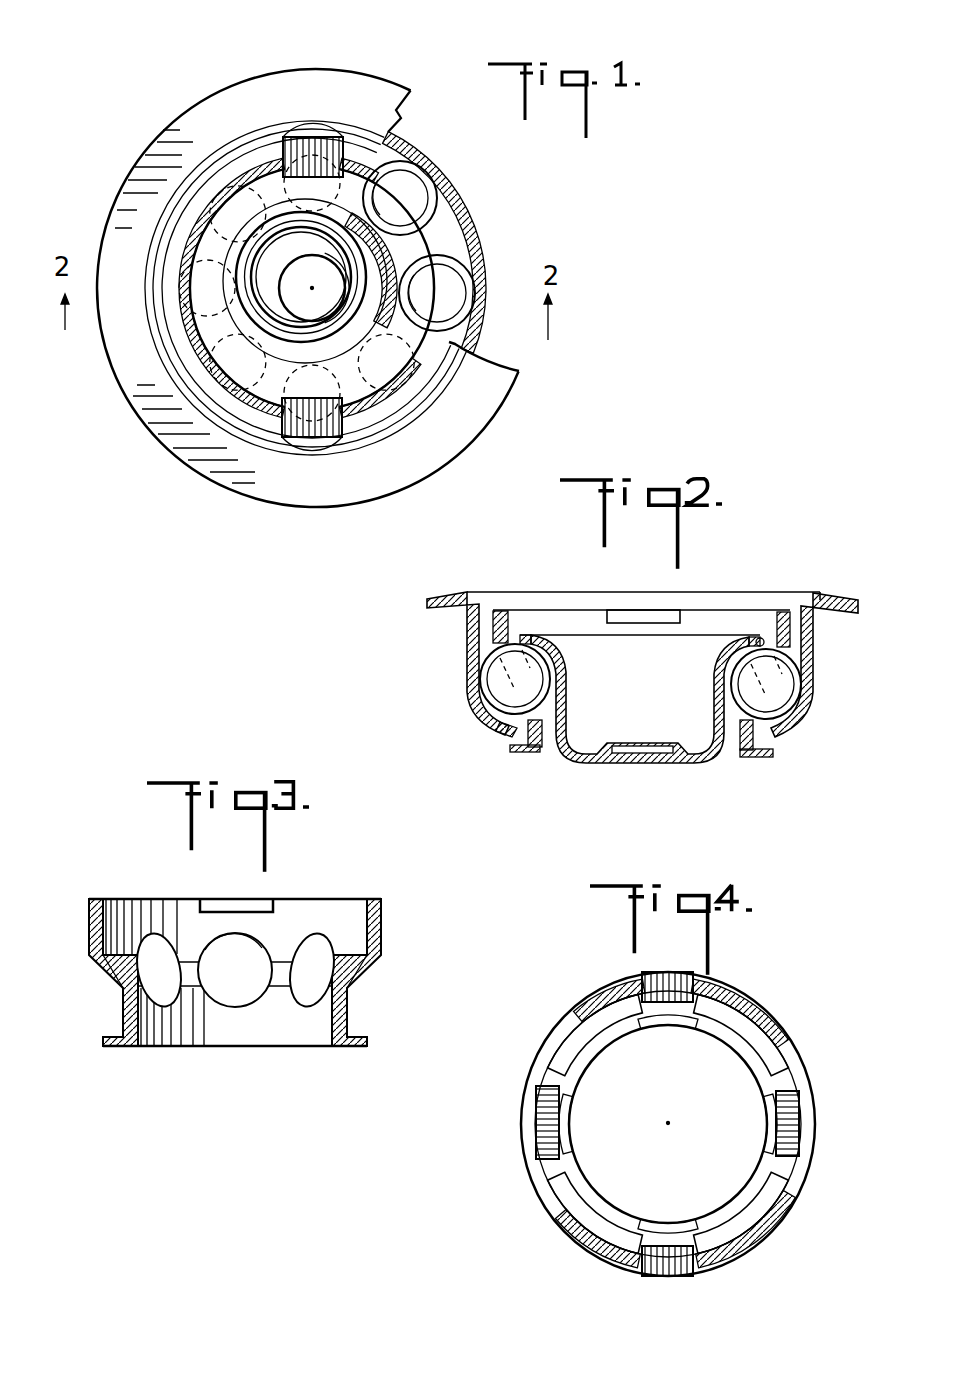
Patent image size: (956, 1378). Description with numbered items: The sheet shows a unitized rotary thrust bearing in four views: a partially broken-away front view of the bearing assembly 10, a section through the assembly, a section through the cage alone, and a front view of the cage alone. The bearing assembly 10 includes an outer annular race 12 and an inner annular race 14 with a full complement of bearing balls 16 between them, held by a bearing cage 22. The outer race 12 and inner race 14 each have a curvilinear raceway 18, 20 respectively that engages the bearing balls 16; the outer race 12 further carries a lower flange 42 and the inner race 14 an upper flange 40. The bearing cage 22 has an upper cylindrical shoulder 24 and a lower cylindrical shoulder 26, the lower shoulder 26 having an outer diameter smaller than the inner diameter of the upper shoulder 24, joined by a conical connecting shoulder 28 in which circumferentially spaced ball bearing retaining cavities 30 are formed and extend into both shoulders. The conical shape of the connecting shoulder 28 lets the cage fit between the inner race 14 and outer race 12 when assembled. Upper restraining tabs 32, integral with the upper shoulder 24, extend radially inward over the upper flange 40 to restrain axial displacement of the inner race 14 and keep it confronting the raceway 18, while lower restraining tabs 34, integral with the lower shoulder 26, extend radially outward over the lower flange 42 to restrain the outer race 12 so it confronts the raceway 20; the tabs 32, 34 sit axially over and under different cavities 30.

In FIG. 1, the bearing assembly 10 is at (144, 436).
In FIG. 2, the bearing assembly 10 is at (790, 755).
In FIG. 1, the outer annular race 12 is at (304, 64).
In FIG. 2, the outer annular race 12 is at (816, 665).
In FIG. 1, the inner annular race 14 is at (352, 250).
In FIG. 2, the inner annular race 14 is at (706, 676).
In FIG. 1, the bearing balls 16 is at (422, 185).
In FIG. 2, the bearing balls 16 is at (488, 684).
In FIG. 1, the curvilinear raceway 18 is at (462, 348).
In FIG. 2, the curvilinear raceway 18 is at (777, 727).
In FIG. 1, the curvilinear raceway 20 is at (400, 280).
In FIG. 2, the curvilinear raceway 20 is at (527, 640).
In FIG. 1, the bearing cage 22 is at (253, 157).
In FIG. 2, the bearing cage 22 is at (497, 612).
In FIG. 3, the bearing cage 22 is at (358, 1012).
In FIG. 3, the upper cylindrical shoulder 24 is at (88, 925).
In FIG. 4, the upper cylindrical shoulder 24 is at (752, 1005).
In FIG. 3, the lower cylindrical shoulder 26 is at (122, 1022).
In FIG. 4, the lower cylindrical shoulder 26 is at (770, 1113).
In FIG. 3, the connecting shoulder 28 is at (105, 978).
In FIG. 4, the connecting shoulder 28 is at (550, 1167).
In FIG. 3, the ball bearing retaining cavities 30 is at (215, 938).
In FIG. 4, the ball bearing retaining cavities 30 is at (580, 1032).
In FIG. 1, the upper restraining tabs 32 is at (323, 413).
In FIG. 2, the upper restraining tabs 32 is at (632, 611).
In FIG. 3, the upper restraining tabs 32 is at (262, 901).
In FIG. 4, the upper restraining tabs 32 is at (688, 992).
In FIG. 2, the lower restraining tabs 34 is at (515, 752).
In FIG. 3, the lower restraining tabs 34 is at (117, 1048).
In FIG. 4, the lower restraining tabs 34 is at (545, 1128).
In FIG. 2, the upper flange 40 is at (761, 640).
In FIG. 2, the lower flange 42 is at (498, 727).